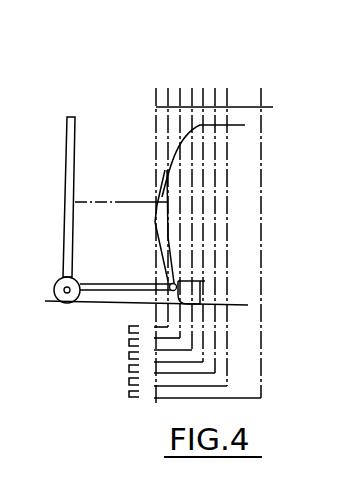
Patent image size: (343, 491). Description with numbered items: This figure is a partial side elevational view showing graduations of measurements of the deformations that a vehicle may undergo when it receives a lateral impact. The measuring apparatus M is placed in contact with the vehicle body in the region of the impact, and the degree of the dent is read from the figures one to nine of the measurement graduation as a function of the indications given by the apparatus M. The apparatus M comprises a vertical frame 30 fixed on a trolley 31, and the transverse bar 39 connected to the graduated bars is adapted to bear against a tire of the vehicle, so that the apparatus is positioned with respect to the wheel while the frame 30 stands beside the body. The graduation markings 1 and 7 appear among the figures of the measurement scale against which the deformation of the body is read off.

The vertical frame 30 is at (68, 206).
The measuring apparatus M is at (61, 233).
The transverse bar 39 is at (176, 285).
The trolley 31 is at (93, 291).
The chain element 1 is at (140, 326).
The chain link 7 is at (134, 396).